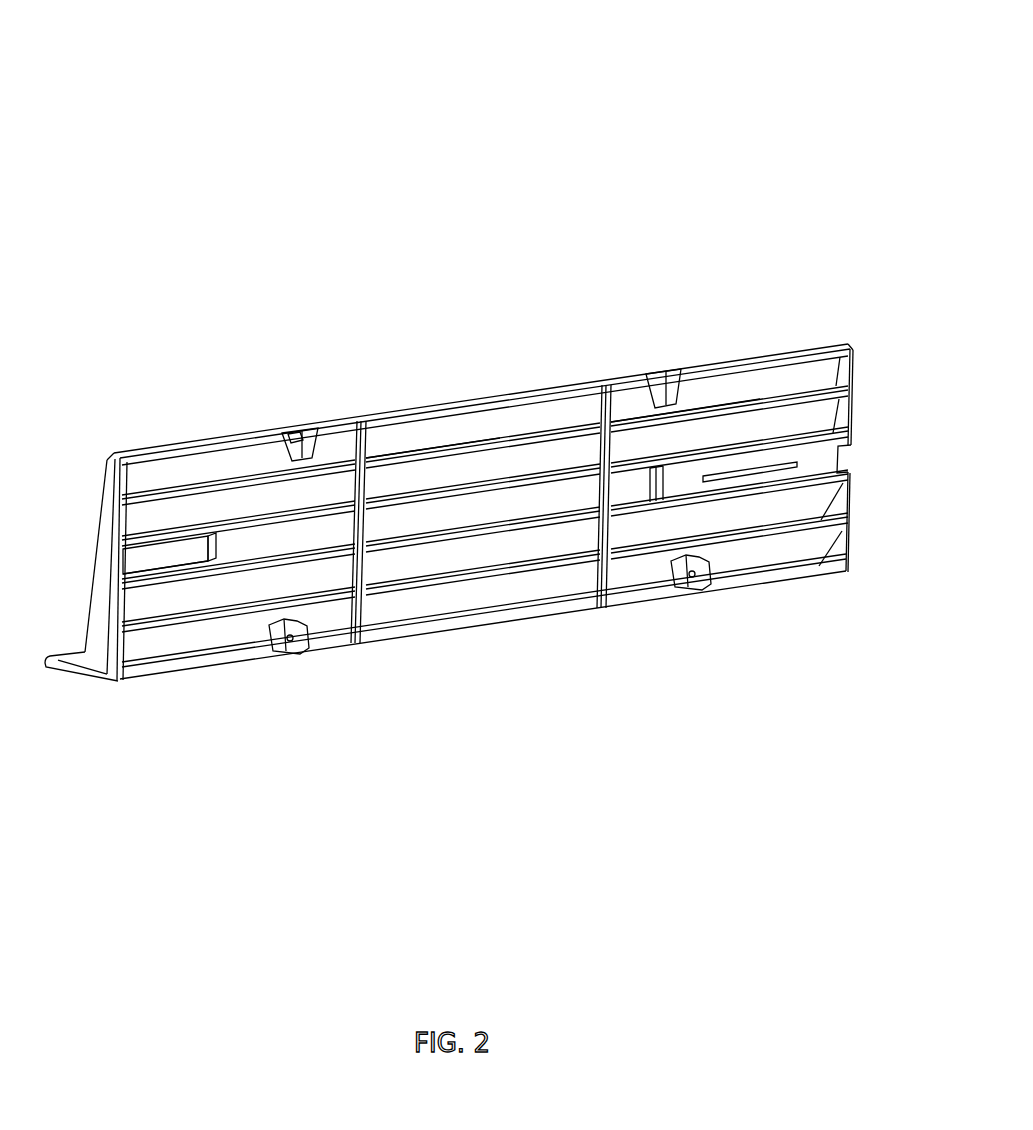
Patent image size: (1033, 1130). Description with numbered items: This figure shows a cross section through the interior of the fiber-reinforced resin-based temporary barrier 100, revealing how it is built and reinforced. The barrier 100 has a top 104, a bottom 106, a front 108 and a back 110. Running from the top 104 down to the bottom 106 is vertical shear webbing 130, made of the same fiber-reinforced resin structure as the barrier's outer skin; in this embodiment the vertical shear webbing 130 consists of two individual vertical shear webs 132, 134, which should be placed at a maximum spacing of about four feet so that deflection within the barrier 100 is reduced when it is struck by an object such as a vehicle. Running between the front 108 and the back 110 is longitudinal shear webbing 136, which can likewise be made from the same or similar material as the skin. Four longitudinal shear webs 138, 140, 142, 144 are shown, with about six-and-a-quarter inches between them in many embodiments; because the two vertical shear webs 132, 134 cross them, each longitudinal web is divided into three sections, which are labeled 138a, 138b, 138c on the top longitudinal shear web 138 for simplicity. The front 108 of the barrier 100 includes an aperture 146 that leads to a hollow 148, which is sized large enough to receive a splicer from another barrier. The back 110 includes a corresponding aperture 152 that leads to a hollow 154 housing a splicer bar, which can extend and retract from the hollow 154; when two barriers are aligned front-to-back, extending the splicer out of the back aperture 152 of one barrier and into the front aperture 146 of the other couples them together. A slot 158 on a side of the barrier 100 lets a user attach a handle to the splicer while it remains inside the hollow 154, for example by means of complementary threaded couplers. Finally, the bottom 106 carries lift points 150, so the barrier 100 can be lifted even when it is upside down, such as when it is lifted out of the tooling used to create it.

The barrier 100 is at (240, 122).
The top 104 is at (478, 280).
The bottom 106 is at (443, 660).
The front 108 is at (107, 437).
The back 110 is at (862, 525).
The vertical shear webbing 130 is at (575, 374).
The vertical shear web 132 is at (357, 440).
The vertical shear web 134 is at (615, 405).
The longitudinal shear webbing 136 is at (551, 448).
The top longitudinal shear web 138 is at (150, 493).
The first section of top longitudinal shear web 138a is at (272, 440).
The second section of top longitudinal shear web 138b is at (450, 447).
The third section of top longitudinal shear web 138c is at (735, 407).
The longitudinal shear web 140 is at (267, 520).
The longitudinal shear web 142 is at (313, 560).
The longitudinal shear web 144 is at (240, 613).
The aperture 146 is at (113, 565).
The hollow 148 is at (148, 563).
The lift points 150 is at (287, 640).
The aperture 152 is at (838, 460).
The hollow 154 is at (798, 470).
The slot 158 is at (770, 470).